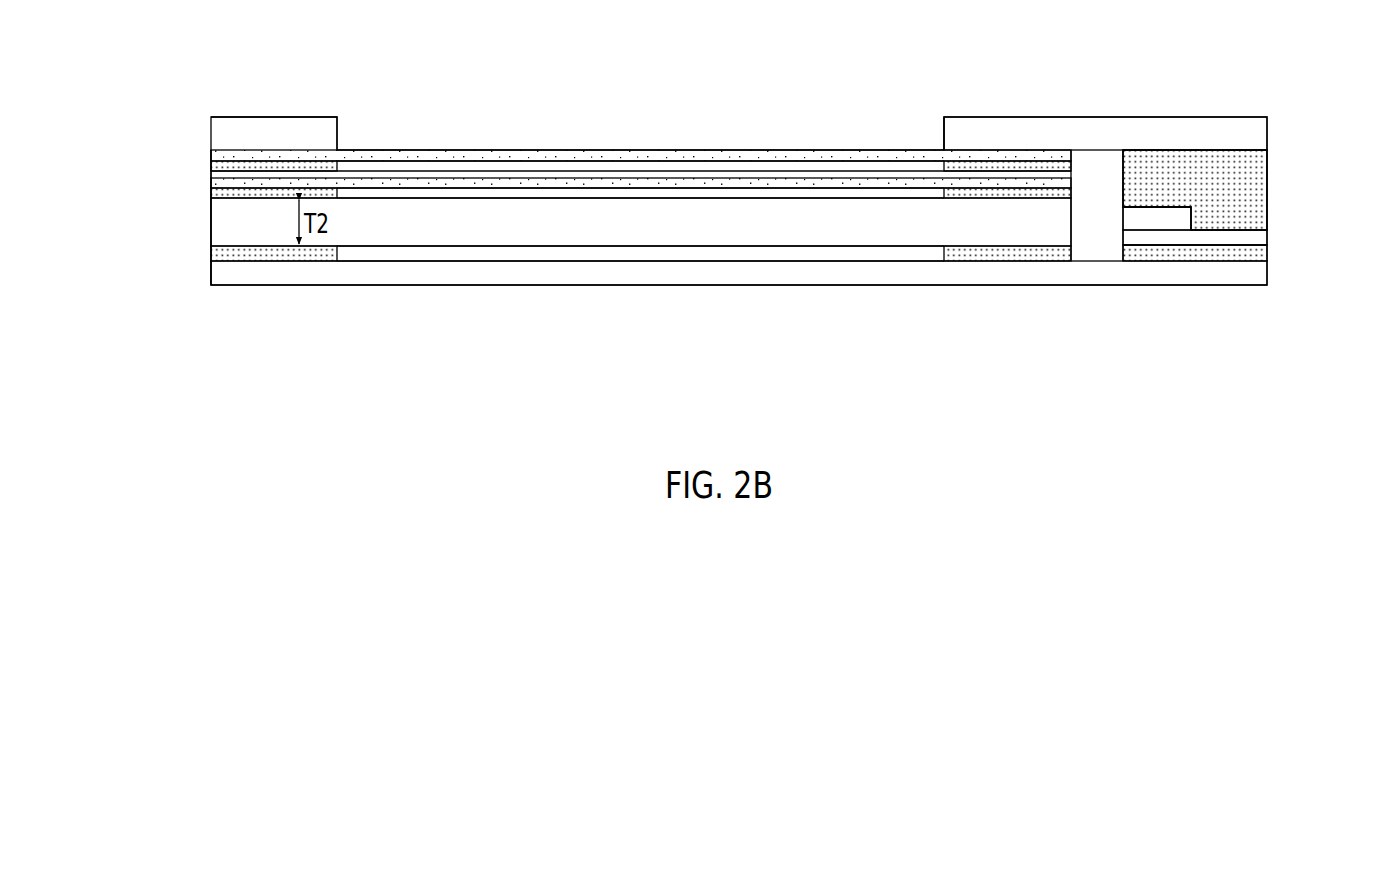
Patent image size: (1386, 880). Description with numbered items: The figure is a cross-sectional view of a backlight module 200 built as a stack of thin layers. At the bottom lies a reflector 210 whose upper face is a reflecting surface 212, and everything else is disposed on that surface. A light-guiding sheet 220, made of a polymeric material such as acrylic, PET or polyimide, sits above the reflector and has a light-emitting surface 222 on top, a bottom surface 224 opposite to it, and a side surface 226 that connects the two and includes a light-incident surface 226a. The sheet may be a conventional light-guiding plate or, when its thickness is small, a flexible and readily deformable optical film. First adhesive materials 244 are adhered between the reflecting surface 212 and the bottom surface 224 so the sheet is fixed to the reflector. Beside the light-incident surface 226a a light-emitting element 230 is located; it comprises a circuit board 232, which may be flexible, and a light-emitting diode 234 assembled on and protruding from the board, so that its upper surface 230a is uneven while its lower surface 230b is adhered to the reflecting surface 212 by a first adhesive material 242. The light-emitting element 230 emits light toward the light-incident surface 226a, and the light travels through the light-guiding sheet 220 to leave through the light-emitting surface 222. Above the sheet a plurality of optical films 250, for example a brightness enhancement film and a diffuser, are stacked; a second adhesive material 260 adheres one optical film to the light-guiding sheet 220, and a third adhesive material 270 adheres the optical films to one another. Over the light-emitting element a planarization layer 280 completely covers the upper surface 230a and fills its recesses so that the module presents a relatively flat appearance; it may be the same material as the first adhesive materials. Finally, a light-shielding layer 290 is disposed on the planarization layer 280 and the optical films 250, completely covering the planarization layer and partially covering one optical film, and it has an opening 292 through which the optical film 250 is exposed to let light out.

The backlight module 200 is at (1191, 421).
The reflector 210 is at (1240, 271).
The reflecting surface 212 is at (373, 258).
The light-guiding sheet 220 is at (592, 243).
The light-emitting surface 222 is at (439, 196).
The bottom surface 224 is at (427, 249).
The side surface 226 is at (208, 225).
The light-incident surface 226a is at (1075, 229).
The light-emitting element 230 is at (1230, 198).
The upper surface 230a is at (1157, 205).
The lower surface 230b is at (1175, 247).
The circuit board 232 is at (1240, 239).
The light-emitting diode 234 is at (1180, 219).
The first adhesive material 242 is at (1256, 251).
The first adhesive material 244 is at (237, 255).
The optical film 250 is at (217, 154).
The second adhesive material 260 is at (213, 196).
The third adhesive material 270 is at (213, 171).
The planarization layer 280 is at (1240, 165).
The light-shielding layer 290 is at (1237, 136).
The opening 292 is at (928, 132).